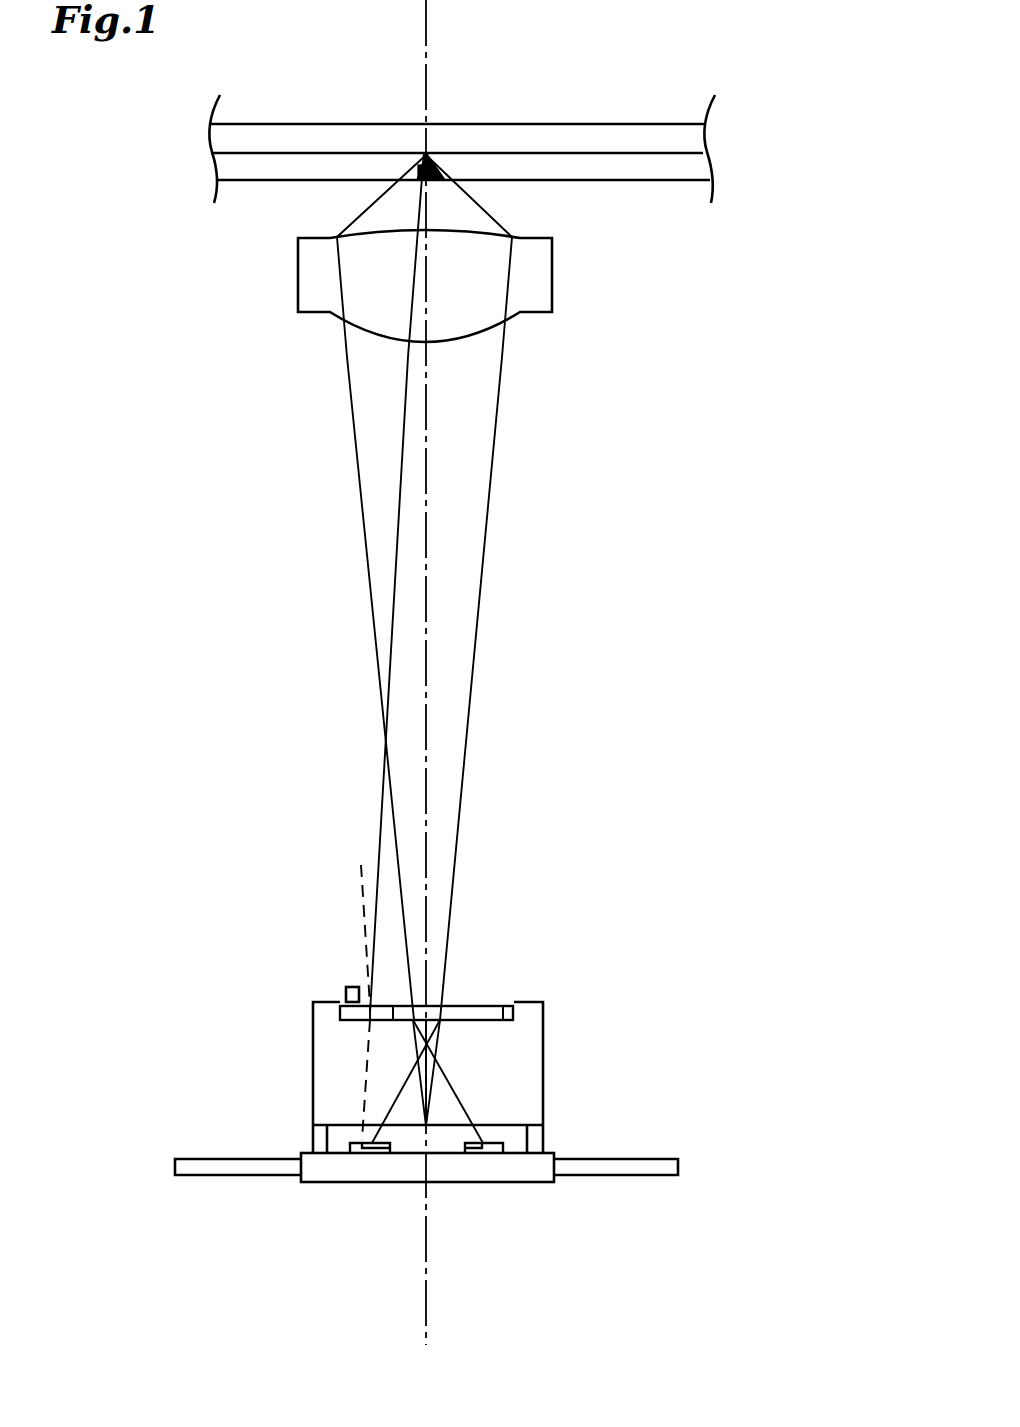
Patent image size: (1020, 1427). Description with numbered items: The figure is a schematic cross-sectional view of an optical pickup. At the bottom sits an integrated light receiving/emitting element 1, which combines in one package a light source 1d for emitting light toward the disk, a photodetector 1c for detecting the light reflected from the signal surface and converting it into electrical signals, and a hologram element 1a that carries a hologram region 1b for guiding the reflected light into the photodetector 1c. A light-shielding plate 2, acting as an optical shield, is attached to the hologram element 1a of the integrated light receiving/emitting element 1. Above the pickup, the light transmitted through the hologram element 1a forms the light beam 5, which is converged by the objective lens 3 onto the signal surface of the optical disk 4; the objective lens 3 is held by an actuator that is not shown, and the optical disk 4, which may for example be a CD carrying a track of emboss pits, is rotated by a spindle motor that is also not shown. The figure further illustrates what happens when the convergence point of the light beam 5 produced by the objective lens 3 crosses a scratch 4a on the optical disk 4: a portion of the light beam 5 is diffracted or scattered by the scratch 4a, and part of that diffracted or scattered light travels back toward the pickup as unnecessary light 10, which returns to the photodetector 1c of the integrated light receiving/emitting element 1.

The integrated light receiving/emitting element 1 is at (542, 1183).
The hologram element 1a is at (523, 1072).
The hologram region 1b is at (413, 1022).
The photodetector 1c is at (480, 1148).
The light source 1d is at (427, 1153).
The light-shielding plate 2 is at (470, 1005).
The objective lens 3 is at (535, 288).
The optical disk 4 is at (693, 169).
The scratch 4a is at (440, 178).
The light beam 5 is at (488, 507).
The unnecessary light 10 is at (378, 820).